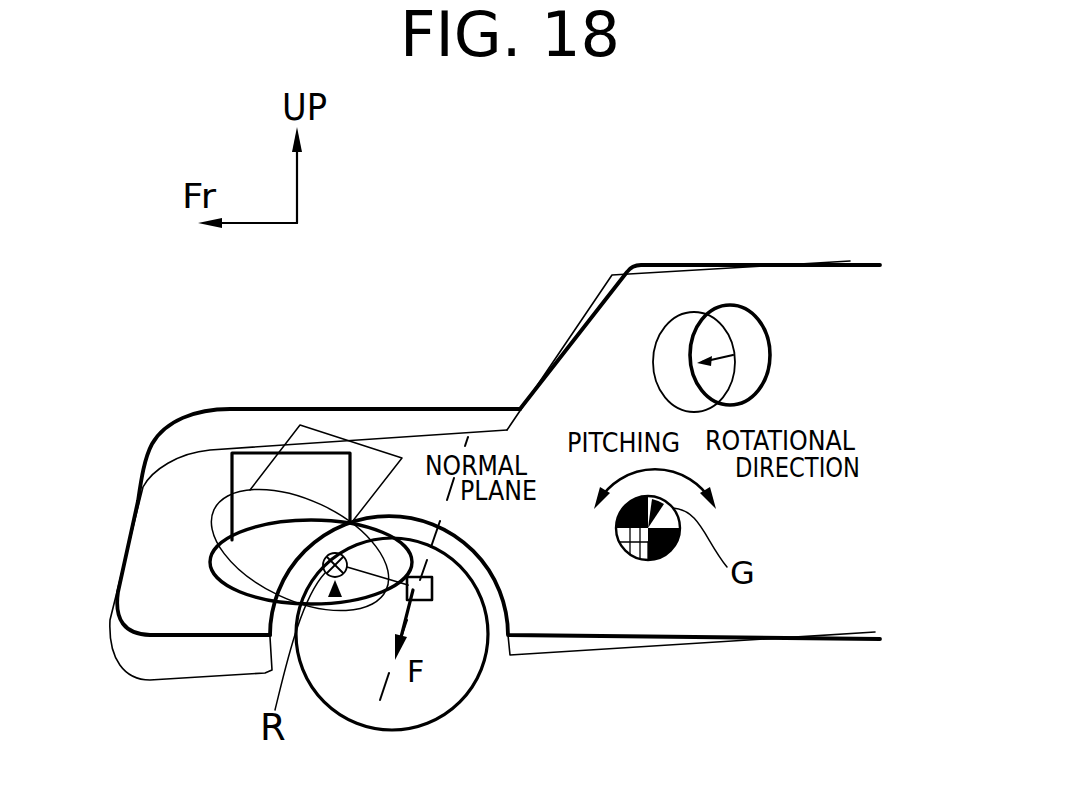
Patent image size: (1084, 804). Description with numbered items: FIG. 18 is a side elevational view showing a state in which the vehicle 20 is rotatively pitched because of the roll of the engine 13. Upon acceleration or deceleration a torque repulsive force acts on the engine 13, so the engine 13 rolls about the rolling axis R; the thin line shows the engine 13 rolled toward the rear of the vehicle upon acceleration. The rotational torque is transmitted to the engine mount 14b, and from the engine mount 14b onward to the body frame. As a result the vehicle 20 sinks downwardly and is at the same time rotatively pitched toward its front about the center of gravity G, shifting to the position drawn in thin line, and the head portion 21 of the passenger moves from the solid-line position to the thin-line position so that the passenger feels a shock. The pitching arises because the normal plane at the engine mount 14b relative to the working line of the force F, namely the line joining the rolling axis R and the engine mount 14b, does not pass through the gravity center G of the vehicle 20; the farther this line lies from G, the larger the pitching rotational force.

The engine 13 is at (232, 475).
The vehicle 20 is at (438, 407).
The head portion 21 is at (757, 313).
The engine mount 14b is at (437, 587).